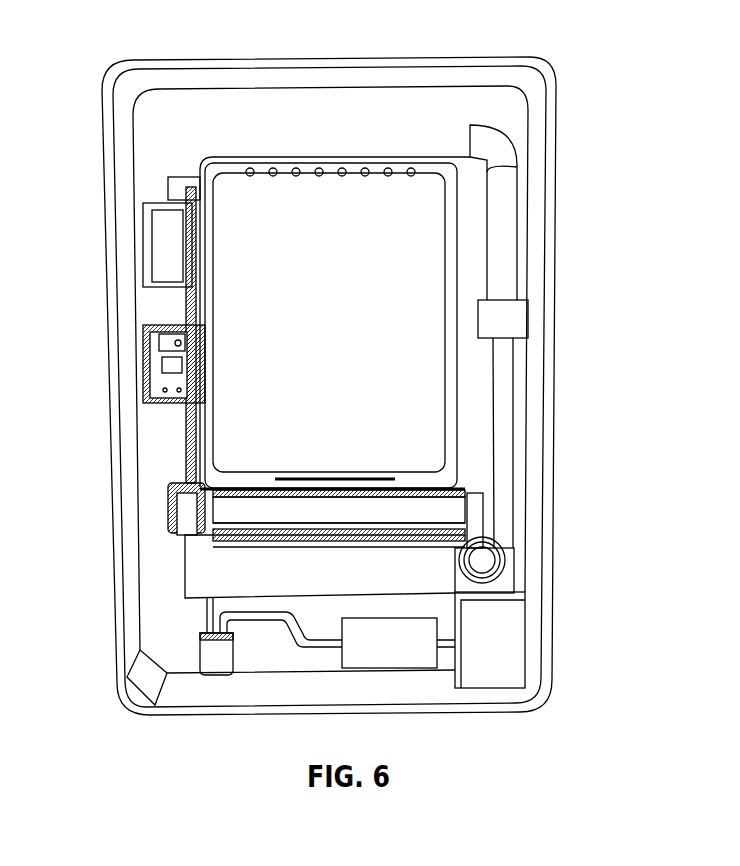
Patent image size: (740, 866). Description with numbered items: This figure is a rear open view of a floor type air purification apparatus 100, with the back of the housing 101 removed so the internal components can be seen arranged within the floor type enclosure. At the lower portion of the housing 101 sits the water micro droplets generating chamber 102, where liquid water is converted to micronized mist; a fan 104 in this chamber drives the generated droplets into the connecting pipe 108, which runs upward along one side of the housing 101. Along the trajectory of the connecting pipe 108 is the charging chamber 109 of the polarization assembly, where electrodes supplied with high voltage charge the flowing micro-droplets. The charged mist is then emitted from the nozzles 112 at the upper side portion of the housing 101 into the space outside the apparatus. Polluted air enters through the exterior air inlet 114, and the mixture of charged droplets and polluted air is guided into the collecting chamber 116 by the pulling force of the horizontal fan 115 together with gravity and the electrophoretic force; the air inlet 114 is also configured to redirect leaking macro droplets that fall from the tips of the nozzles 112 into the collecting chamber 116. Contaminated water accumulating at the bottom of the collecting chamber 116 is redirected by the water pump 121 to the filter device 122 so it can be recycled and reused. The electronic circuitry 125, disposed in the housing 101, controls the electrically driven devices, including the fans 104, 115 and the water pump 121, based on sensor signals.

The air purification apparatus 100 is at (140, 48).
The housing 101 is at (562, 118).
The water micro droplets generating chamber 102 is at (518, 625).
The fan 104 is at (503, 567).
The connecting pipe 108 is at (505, 428).
The charging chamber 109 is at (523, 317).
The nozzles 112 is at (296, 180).
The air inlet 114 is at (275, 478).
The fan 115 is at (170, 510).
The collecting chamber 116 is at (190, 578).
The water pump 121 is at (215, 663).
The filter device 122 is at (388, 662).
The electronic circuitry 125 is at (153, 367).